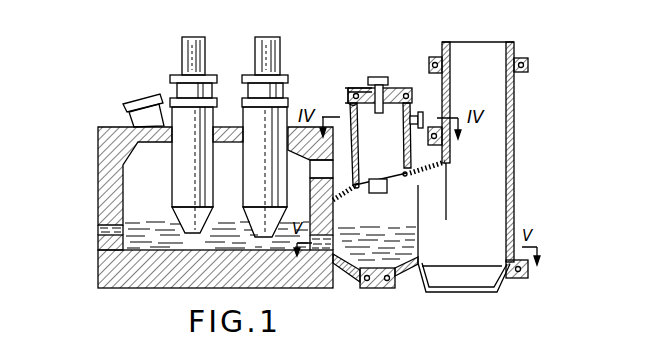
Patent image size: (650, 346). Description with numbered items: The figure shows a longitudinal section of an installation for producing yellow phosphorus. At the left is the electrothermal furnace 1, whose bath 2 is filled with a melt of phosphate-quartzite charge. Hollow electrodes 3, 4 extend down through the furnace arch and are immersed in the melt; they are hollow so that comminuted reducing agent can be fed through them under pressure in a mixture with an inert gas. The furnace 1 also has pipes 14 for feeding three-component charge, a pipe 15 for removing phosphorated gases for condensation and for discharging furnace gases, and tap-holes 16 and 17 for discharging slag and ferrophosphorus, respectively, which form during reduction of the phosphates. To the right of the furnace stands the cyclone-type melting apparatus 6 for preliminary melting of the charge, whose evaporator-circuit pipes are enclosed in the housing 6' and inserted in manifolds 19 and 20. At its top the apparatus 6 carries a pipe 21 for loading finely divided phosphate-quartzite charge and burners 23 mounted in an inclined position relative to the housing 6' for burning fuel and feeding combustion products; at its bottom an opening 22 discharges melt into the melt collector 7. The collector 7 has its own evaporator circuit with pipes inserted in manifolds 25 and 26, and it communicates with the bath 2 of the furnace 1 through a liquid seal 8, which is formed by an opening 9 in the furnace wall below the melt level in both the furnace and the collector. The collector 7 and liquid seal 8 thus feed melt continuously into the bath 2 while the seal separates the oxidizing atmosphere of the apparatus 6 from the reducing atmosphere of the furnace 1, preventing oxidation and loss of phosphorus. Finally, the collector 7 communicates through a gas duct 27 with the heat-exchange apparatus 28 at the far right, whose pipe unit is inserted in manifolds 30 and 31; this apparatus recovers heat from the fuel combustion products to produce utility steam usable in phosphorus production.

The electrothermal furnace 1 is at (95, 140).
The bath 2 is at (208, 244).
The hollow electrode 3 is at (255, 50).
The hollow electrode 4 is at (182, 52).
The cyclone-type melting apparatus 6 is at (383, 121).
The housing 6' is at (360, 66).
The melt collector 7 is at (344, 268).
The liquid seal 8 is at (317, 256).
The opening 9 is at (336, 240).
The pipe 14 is at (216, 132).
The pipe 15 is at (141, 96).
The tap-hole 16 is at (100, 254).
The tap-hole 17 is at (98, 230).
The manifold 19 is at (347, 91).
The manifold 20 is at (410, 92).
The pipe 21 is at (379, 77).
The opening 22 is at (387, 192).
The burner 23 is at (416, 126).
The manifold 25 is at (386, 287).
The manifold 26 is at (450, 143).
The gas duct 27 is at (433, 210).
The heat-exchange apparatus 28 is at (514, 196).
The manifold 30 is at (435, 57).
The manifold 31 is at (520, 58).